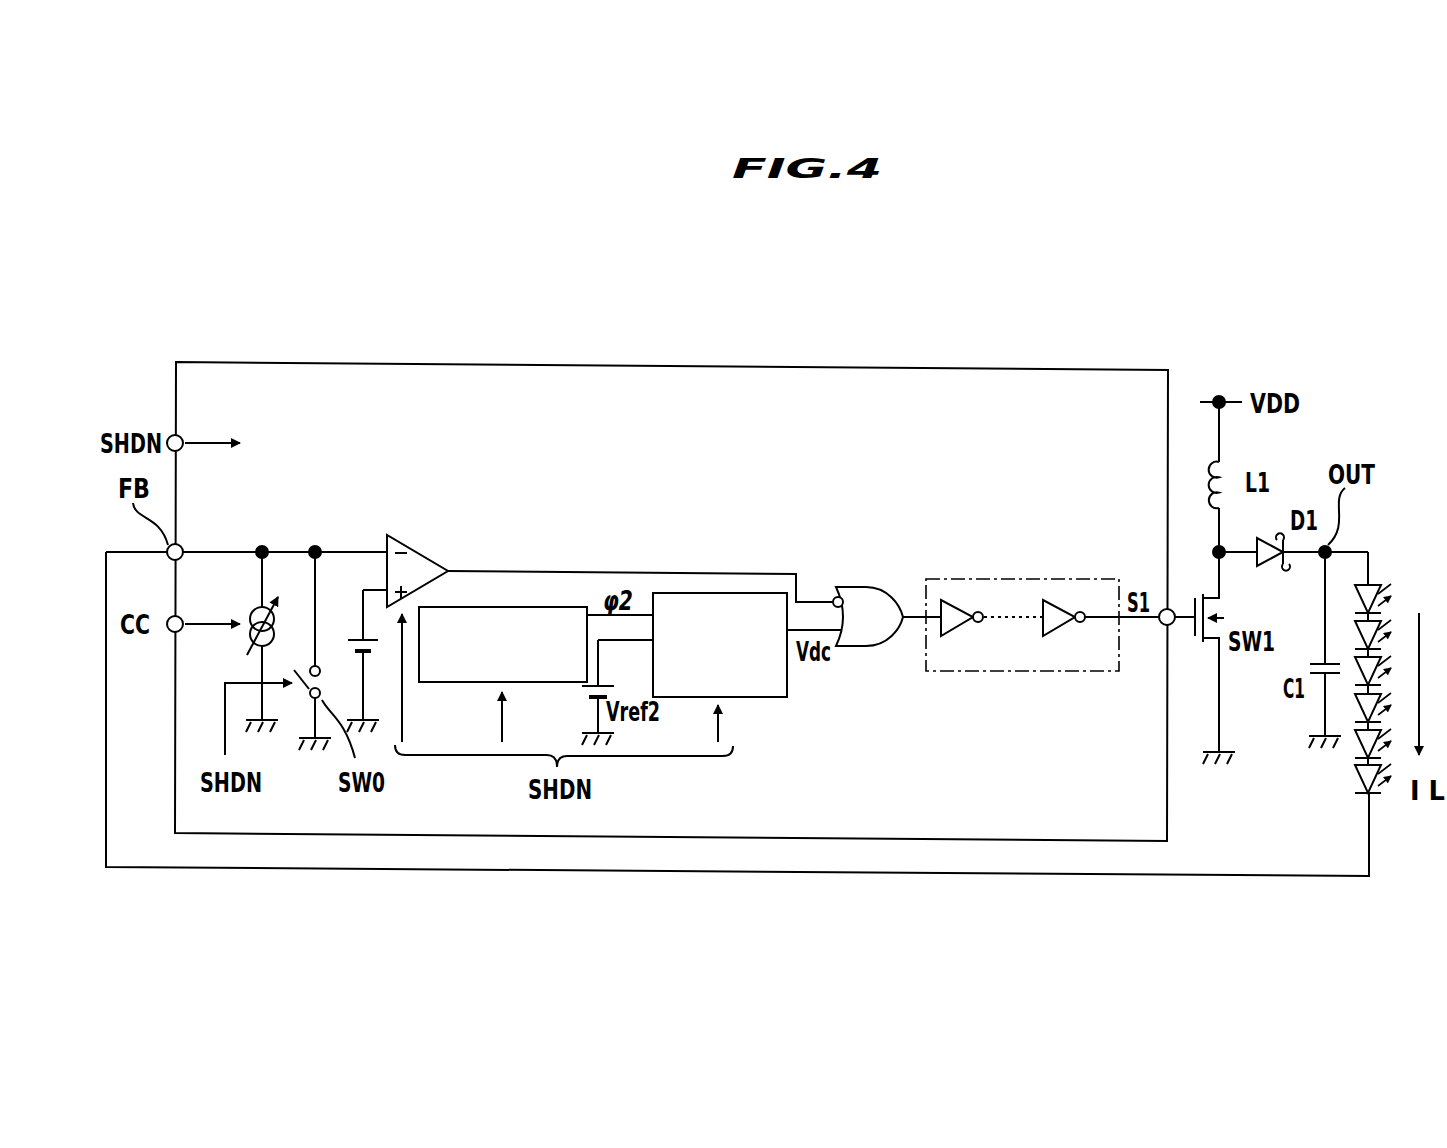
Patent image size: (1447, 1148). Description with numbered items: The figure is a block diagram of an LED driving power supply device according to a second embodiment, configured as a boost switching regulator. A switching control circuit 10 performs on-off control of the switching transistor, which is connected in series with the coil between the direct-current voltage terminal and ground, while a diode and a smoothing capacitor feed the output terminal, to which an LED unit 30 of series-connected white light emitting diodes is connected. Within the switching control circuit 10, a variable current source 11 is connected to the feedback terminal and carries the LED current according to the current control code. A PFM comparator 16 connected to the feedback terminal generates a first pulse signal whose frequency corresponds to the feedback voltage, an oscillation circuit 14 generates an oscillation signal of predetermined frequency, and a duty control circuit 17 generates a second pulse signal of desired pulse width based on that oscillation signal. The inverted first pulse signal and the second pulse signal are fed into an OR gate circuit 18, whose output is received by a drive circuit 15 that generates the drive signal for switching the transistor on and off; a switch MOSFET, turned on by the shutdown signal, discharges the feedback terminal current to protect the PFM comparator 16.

The switching control circuit 10 is at (864, 367).
The variable current source 11 is at (246, 613).
The oscillation circuit 14 is at (467, 683).
The drive circuit 15 is at (1000, 672).
The PFM comparator 16 is at (420, 553).
The duty control circuit 17 is at (770, 700).
The OR gate circuit 18 is at (862, 587).
The LED unit 30 is at (1381, 565).